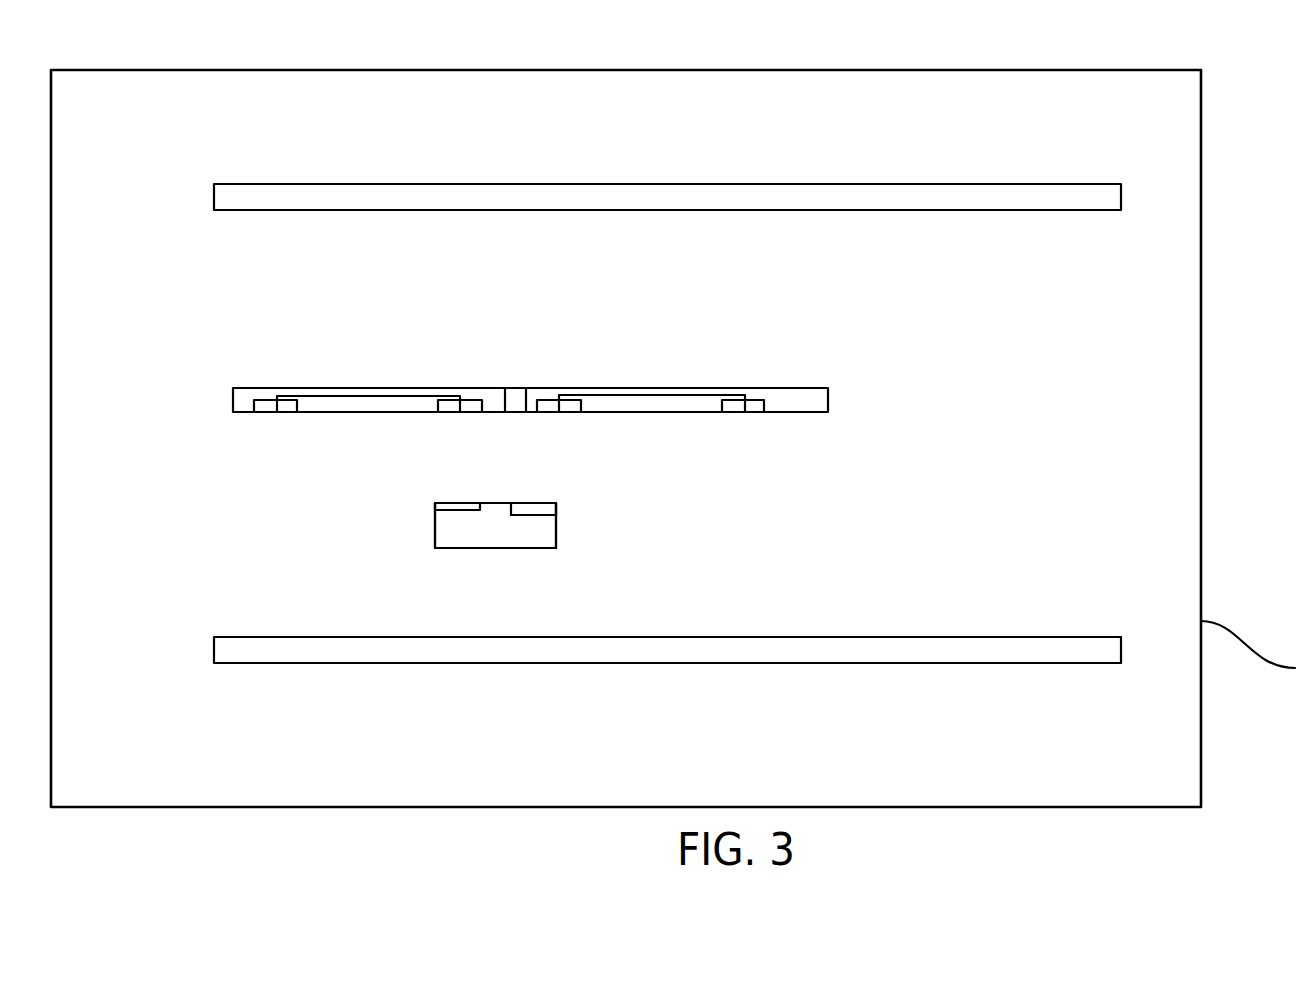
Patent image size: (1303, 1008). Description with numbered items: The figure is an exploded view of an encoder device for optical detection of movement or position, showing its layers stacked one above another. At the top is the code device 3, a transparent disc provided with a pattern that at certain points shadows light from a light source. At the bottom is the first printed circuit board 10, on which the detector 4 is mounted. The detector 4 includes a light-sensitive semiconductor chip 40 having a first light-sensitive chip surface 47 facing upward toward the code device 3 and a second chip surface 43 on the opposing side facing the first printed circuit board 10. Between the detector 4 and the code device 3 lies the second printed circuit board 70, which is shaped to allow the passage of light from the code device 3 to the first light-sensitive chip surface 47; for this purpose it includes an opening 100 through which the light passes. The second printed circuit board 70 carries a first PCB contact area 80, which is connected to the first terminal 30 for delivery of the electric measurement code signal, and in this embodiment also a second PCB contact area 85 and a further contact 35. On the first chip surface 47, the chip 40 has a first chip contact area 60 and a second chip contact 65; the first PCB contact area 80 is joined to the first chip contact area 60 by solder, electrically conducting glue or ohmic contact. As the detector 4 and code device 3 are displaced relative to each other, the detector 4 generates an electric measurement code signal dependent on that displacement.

The code device 3 is at (213, 195).
The first printed circuit board 10 is at (1121, 650).
The second printed circuit board 70 is at (233, 400).
The opening 100 is at (515, 388).
The first terminal 30 is at (272, 412).
The first PCB contact area 80 is at (458, 412).
The second PCB contact area 85 is at (560, 412).
The contact pad 35 is at (745, 412).
The detector 4 is at (495, 525).
The light-sensitive semiconductor chip 40 is at (556, 530).
The first chip contact area 60 is at (458, 503).
The first light-sensitive chip surface 47 is at (492, 503).
The second chip contact 65 is at (533, 515).
The second chip surface 43 is at (453, 548).